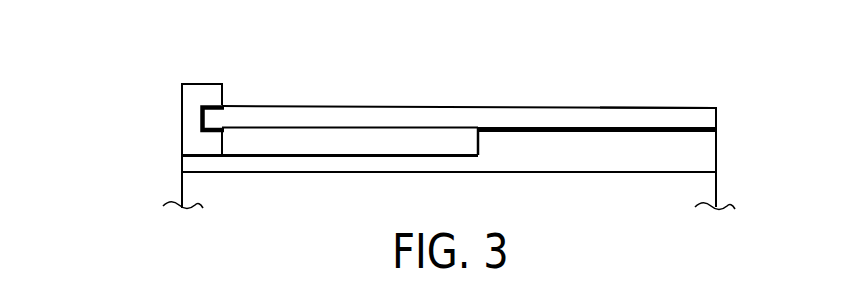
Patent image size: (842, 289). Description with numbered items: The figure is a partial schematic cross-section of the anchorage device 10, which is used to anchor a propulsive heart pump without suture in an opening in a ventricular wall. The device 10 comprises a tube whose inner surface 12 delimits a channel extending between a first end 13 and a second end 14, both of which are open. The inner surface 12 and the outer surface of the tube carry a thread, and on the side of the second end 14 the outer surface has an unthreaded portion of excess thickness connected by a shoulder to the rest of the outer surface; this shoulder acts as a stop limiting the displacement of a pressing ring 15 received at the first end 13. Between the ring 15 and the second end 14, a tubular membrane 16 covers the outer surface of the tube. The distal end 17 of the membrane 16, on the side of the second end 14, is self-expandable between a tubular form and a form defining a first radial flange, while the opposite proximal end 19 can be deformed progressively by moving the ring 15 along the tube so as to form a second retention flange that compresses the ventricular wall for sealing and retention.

The anchorage device 10 is at (120, 88).
The inner surface 12 is at (252, 175).
The first end 13 is at (182, 164).
The second end 14 is at (716, 155).
The pressing ring 15 is at (193, 93).
The tubular membrane 16 is at (506, 107).
The distal end 17 is at (703, 118).
The proximal end 19 is at (223, 117).